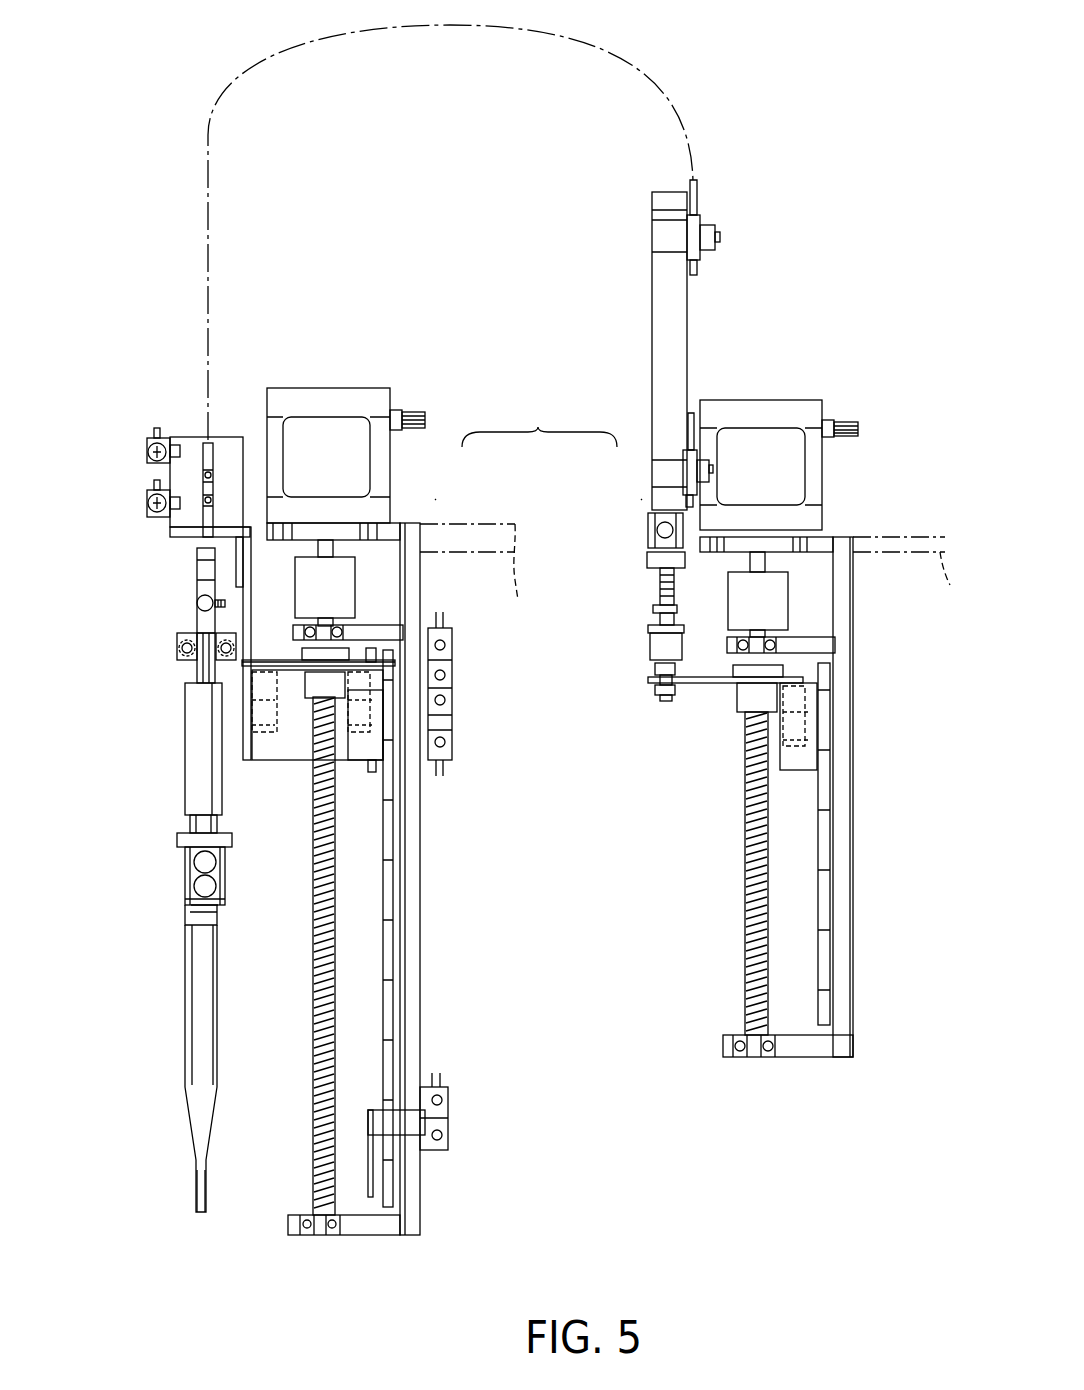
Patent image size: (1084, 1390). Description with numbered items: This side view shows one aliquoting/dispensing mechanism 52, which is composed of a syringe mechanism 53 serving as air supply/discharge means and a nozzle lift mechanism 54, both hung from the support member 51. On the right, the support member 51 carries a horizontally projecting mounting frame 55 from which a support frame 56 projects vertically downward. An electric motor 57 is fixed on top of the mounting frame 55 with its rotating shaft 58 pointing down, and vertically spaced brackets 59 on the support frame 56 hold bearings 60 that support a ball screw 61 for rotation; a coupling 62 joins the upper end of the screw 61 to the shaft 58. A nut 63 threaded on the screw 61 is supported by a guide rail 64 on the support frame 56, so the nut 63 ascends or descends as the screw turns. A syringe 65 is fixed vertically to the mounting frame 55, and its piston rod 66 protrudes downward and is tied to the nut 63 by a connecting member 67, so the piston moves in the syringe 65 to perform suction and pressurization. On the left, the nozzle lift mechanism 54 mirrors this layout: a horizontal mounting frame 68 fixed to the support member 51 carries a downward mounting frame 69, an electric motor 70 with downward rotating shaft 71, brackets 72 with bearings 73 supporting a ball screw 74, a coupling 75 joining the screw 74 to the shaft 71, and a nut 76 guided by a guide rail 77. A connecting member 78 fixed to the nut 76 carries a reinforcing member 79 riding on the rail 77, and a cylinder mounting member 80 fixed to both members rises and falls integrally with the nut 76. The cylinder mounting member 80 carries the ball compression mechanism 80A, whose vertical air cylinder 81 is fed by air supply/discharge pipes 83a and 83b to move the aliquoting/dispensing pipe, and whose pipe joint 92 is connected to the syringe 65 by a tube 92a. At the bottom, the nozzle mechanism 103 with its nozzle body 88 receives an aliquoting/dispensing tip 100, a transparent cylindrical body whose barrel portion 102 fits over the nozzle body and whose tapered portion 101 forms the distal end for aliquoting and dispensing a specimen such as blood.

The tube 92a is at (645, 70).
The aliquoting/dispensing mechanism 52 is at (538, 427).
The nozzle lift mechanism 54 is at (438, 498).
The syringe mechanism 53 is at (640, 498).
The electric motor 70 is at (366, 392).
The mounting frame 68 is at (402, 523).
The rotating shaft 71 is at (335, 548).
The bearings 73 is at (300, 632).
The brackets 72 is at (375, 660).
The reinforcing member 79 is at (275, 762).
The nut 76 is at (300, 698).
The connecting member 78 is at (355, 772).
The ball screw 74 is at (312, 1000).
The guide rail 77 is at (382, 955).
The mounting frame 69 is at (421, 875).
The ball compression mechanism 80A is at (147, 790).
The air cylinder 81 is at (186, 437).
The air supply/discharge pipe 83a is at (147, 452).
The air supply/discharge pipe 83b is at (147, 503).
The coupling 75 is at (197, 582).
The pipe joint 92 is at (200, 610).
The cylinder mounting member 80 is at (200, 672).
The nozzle mechanism 103 is at (160, 800).
The nozzle body 88 is at (177, 846).
The barrel portion 102 is at (185, 880).
The aliquoting/dispensing tip 100 is at (185, 1013).
The tapered portion 101 is at (196, 1203).
The support member 51 is at (518, 595).
The syringe 65 is at (652, 340).
The electric motor 57 is at (798, 400).
The mounting frame 55 is at (823, 537).
The rotating shaft 58 is at (770, 562).
The brackets 59 is at (810, 633).
The bearings 60 is at (740, 650).
The connecting member 67 is at (702, 677).
The nut 63 is at (737, 705).
The ball screw 61 is at (744, 883).
The guide rail 64 is at (815, 803).
The support frame 56 is at (853, 900).
The coupling 62 is at (660, 580).
The piston rod 66 is at (650, 625).